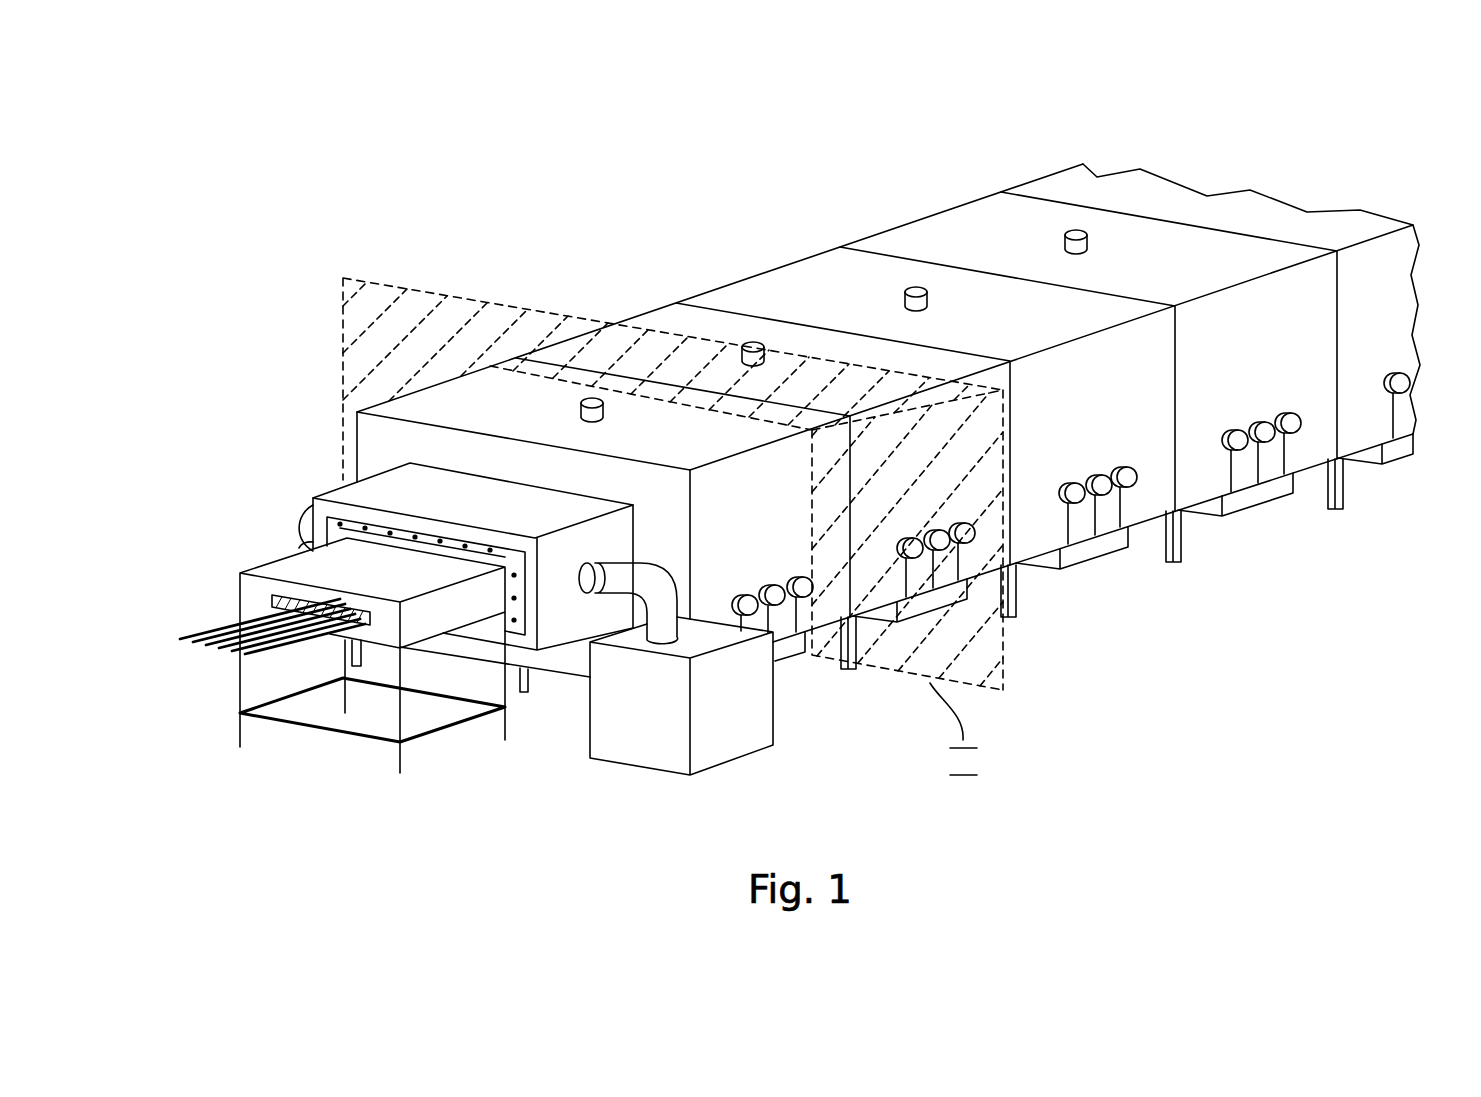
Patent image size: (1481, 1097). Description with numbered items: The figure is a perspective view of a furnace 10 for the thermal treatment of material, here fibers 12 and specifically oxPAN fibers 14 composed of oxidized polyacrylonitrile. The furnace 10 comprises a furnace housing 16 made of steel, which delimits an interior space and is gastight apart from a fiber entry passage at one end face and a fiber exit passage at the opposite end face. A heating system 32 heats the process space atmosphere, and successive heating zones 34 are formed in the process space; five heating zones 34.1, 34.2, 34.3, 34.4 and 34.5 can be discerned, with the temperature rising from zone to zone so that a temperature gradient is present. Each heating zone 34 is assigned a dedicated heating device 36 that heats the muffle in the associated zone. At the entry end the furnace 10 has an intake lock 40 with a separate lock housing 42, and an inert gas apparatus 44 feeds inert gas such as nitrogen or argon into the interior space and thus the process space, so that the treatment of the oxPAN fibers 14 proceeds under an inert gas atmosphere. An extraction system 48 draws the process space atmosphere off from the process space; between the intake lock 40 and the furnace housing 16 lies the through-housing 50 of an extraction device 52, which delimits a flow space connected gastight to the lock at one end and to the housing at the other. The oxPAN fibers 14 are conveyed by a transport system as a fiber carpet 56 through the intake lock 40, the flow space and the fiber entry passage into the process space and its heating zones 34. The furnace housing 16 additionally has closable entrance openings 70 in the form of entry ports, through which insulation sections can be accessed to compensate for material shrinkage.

The furnace 10 is at (352, 172).
The fibers 12 is at (200, 596).
The oxPAN fibers 14 is at (185, 634).
The furnace housing 16 is at (859, 428).
The heating system 32 is at (1092, 640).
The heating zones 34 is at (888, 361).
The heating zone 34.1 is at (475, 400).
The heating zone 34.2 is at (675, 318).
The heating zone 34.3 is at (742, 298).
The heating zone 34.4 is at (948, 238).
The heating zone 34.5 is at (1158, 190).
The heating device 36 is at (813, 678).
The intake lock 40 is at (288, 562).
The lock housing 42 is at (417, 618).
The inert gas apparatus 44 is at (386, 630).
The extraction system 48 is at (562, 695).
The through-housing 50 is at (360, 497).
The extraction device 52 is at (406, 486).
The fiber carpet 56 is at (204, 672).
The entrance openings 70 is at (603, 413).